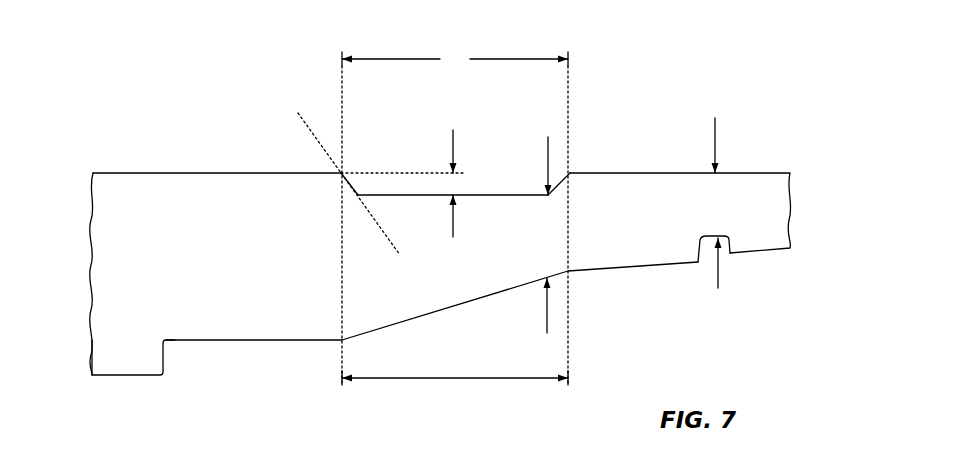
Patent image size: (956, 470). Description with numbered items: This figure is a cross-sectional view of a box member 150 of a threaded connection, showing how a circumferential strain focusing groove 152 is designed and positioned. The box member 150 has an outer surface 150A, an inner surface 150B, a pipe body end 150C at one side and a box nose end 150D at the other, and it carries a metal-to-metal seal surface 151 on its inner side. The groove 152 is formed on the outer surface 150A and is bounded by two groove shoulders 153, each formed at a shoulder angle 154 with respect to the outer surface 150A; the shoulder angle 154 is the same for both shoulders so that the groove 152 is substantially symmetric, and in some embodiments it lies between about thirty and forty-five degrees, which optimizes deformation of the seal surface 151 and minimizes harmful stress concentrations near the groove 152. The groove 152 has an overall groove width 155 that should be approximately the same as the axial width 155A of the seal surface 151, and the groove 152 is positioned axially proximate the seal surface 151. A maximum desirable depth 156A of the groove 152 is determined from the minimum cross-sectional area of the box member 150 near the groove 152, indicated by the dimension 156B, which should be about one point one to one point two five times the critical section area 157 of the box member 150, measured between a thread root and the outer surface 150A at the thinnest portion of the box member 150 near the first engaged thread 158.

The box member 150 is at (133, 358).
The outer surface 150A is at (232, 173).
The inner surface 150B is at (232, 340).
The pipe body end 150C is at (78, 300).
The box nose end 150D is at (870, 219).
The metal-to-metal seal surface 151 is at (452, 307).
The strain focusing groove 152 is at (490, 197).
The groove shoulders 153 is at (345, 181).
The shoulder angle 154 is at (375, 229).
The overall groove width 155 is at (522, 57).
The axial width of the seal surface 155A is at (413, 382).
The maximum desirable depth 156A is at (483, 122).
The tapered region thickness 156B is at (565, 367).
The critical section area 157 is at (725, 272).
The first engaged thread 158 is at (704, 262).